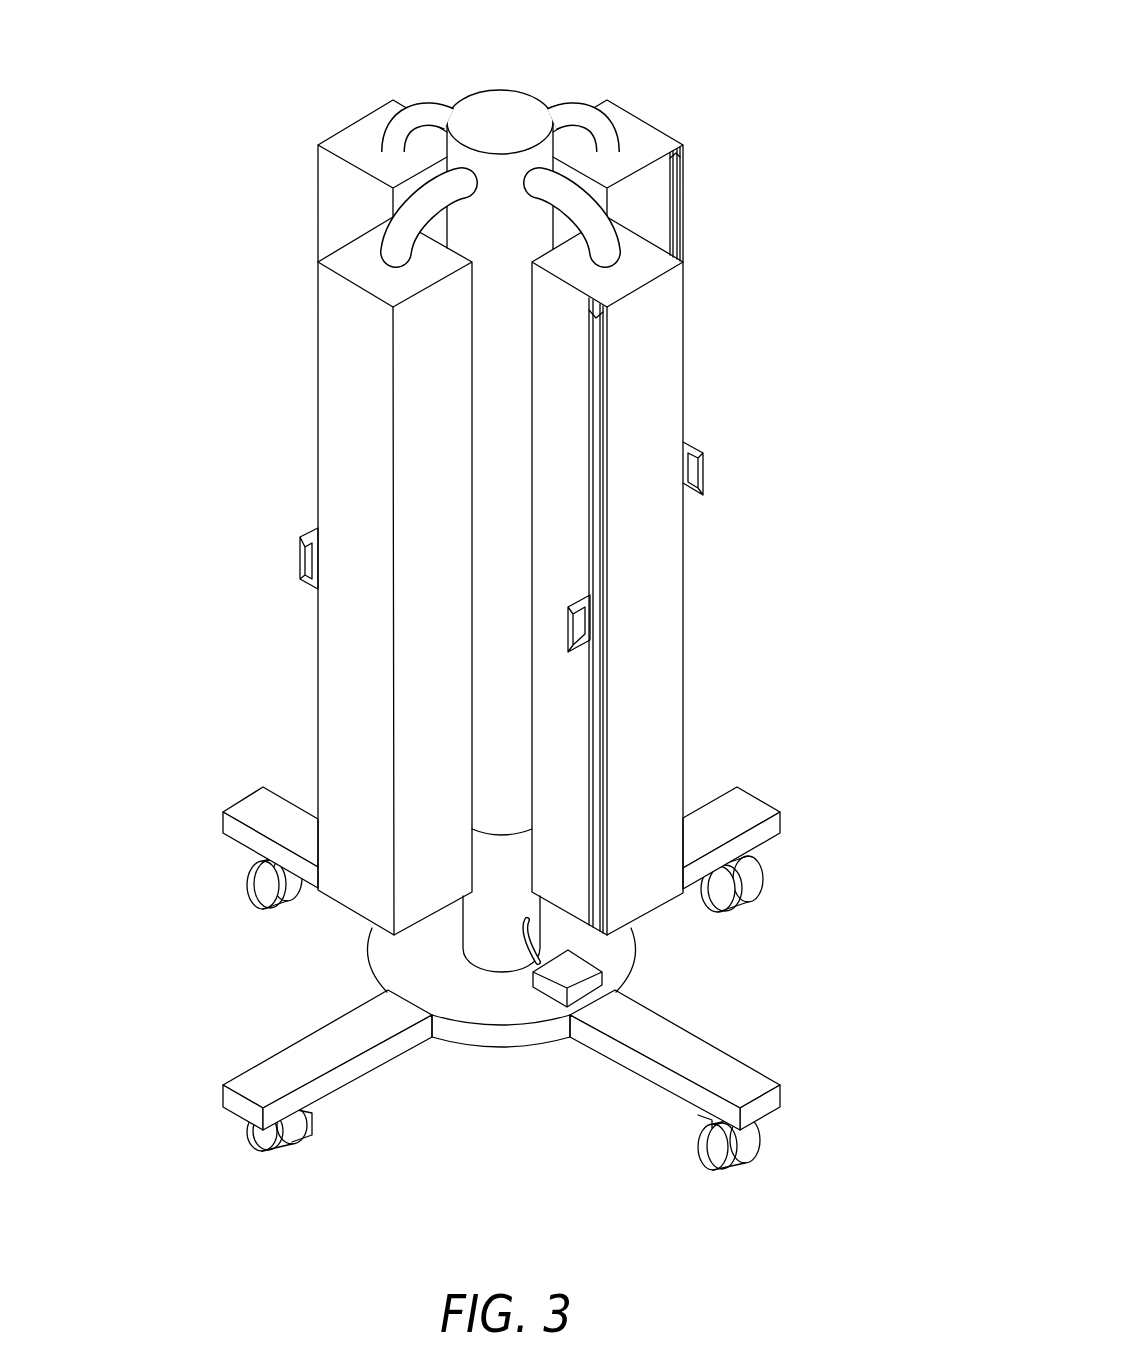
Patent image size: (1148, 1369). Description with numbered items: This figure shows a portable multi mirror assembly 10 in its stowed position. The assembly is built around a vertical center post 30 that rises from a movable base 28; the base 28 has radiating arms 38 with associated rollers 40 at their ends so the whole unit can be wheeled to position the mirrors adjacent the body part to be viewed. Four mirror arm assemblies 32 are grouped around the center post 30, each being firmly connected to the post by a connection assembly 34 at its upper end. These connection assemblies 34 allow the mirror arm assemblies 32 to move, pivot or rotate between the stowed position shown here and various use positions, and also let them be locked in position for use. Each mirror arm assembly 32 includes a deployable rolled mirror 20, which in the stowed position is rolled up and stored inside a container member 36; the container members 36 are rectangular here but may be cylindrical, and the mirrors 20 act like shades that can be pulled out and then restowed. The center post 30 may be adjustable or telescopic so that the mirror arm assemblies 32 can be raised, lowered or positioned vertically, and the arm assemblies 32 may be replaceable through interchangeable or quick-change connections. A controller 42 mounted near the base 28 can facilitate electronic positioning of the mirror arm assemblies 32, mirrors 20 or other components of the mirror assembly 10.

The mirror assembly 10 is at (230, 100).
The mirror 20 is at (595, 370).
The base 28 is at (500, 1048).
The center post 30 is at (500, 122).
The mirror arm assembly 32 is at (718, 183).
The connection assembly 34 is at (425, 115).
The container member 36 is at (340, 318).
The arm 38 is at (598, 318).
The roller 40 is at (718, 893).
The controller 42 is at (575, 970).